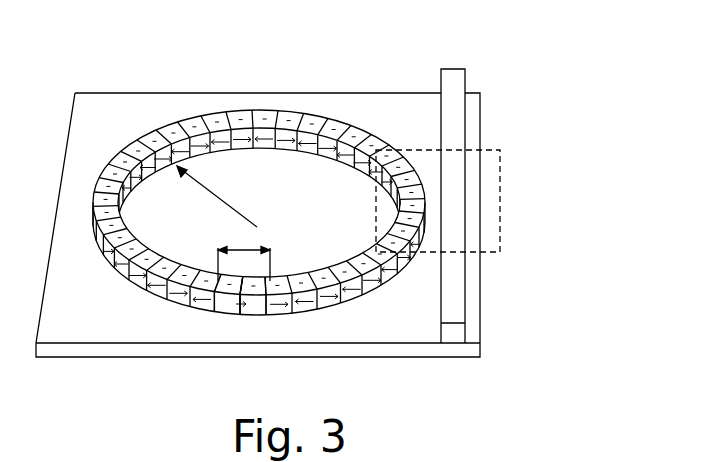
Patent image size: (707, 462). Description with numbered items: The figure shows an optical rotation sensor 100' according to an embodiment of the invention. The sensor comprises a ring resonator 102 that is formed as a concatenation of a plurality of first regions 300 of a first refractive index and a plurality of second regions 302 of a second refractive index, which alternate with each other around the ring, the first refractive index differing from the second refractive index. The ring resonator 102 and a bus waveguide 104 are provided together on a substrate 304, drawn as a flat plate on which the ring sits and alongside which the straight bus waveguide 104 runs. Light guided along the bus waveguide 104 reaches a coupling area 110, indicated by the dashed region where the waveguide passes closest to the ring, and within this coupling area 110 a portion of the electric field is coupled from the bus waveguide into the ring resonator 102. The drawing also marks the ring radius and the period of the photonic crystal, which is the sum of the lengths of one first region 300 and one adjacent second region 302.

The optical rotation sensor 100' is at (336, 228).
The ring resonator 102 is at (141, 137).
The bus waveguide 104 is at (466, 78).
The coupling area 110 is at (500, 172).
The first region 300 is at (227, 313).
The second region 302 is at (258, 283).
The substrate 304 is at (83, 343).